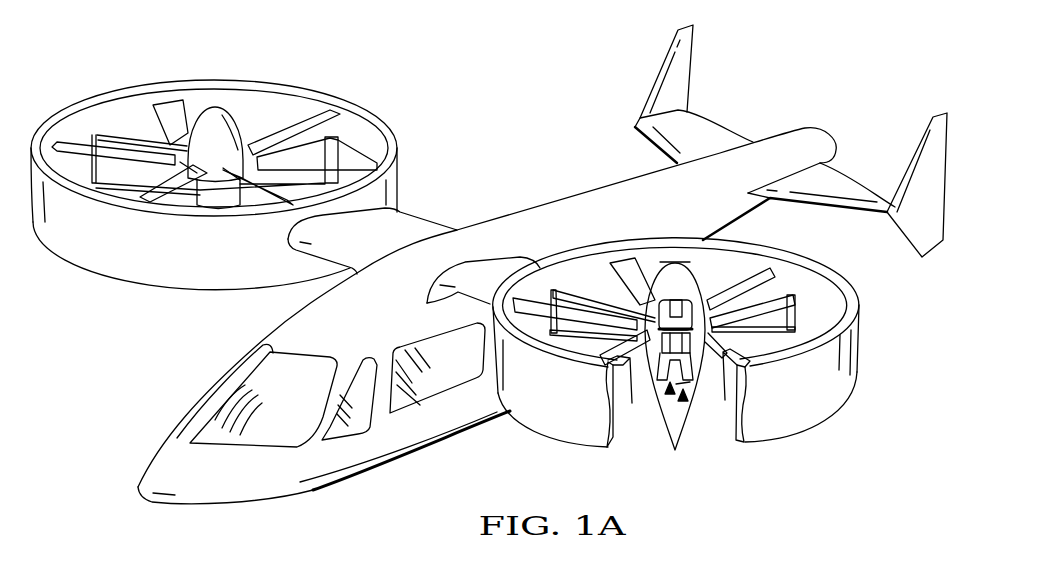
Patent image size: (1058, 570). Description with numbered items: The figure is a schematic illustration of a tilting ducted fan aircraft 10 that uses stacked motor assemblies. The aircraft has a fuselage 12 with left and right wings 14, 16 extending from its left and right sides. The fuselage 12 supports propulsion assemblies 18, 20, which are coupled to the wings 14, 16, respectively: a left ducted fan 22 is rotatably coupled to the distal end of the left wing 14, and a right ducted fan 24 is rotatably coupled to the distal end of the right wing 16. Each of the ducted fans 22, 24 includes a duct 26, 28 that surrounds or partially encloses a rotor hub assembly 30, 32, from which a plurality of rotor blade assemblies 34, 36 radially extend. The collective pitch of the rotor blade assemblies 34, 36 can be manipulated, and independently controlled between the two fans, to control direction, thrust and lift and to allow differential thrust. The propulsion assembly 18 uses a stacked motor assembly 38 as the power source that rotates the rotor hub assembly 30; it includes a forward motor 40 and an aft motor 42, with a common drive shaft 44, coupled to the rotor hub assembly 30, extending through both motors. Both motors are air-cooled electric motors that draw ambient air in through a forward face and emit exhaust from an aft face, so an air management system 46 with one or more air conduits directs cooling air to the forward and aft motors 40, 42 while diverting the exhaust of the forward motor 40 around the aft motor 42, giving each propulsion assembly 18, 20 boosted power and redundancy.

The tilting ducted fan aircraft 10 is at (589, 70).
The fuselage 12 is at (316, 494).
The left wing 14 is at (493, 272).
The right wing 16 is at (412, 228).
The propulsion assembly 18 is at (787, 435).
The propulsion assembly 20 is at (249, 84).
The left ducted fan 22 is at (708, 322).
The right ducted fan 24 is at (214, 154).
The duct 26 is at (862, 357).
The duct 28 is at (118, 90).
The rotor hub assembly 30 is at (727, 265).
The rotor hub assembly 32 is at (215, 108).
The rotor blade assemblies 34 is at (550, 283).
The rotor blade assemblies 36 is at (320, 112).
The stacked motor assembly 38 is at (683, 380).
The forward motor 40 is at (697, 298).
The aft motor 42 is at (667, 365).
The common drive shaft 44 is at (660, 305).
The air management system 46 is at (657, 377).